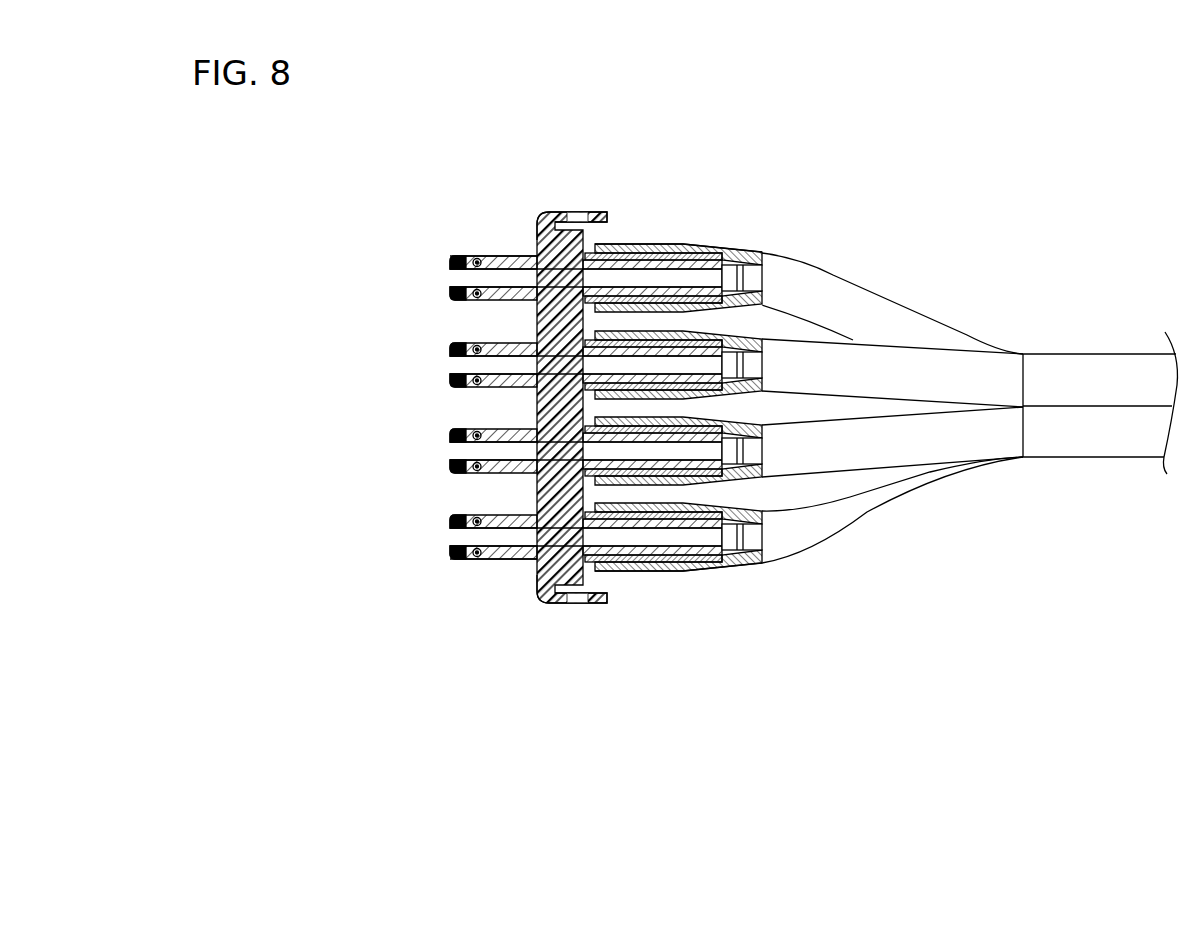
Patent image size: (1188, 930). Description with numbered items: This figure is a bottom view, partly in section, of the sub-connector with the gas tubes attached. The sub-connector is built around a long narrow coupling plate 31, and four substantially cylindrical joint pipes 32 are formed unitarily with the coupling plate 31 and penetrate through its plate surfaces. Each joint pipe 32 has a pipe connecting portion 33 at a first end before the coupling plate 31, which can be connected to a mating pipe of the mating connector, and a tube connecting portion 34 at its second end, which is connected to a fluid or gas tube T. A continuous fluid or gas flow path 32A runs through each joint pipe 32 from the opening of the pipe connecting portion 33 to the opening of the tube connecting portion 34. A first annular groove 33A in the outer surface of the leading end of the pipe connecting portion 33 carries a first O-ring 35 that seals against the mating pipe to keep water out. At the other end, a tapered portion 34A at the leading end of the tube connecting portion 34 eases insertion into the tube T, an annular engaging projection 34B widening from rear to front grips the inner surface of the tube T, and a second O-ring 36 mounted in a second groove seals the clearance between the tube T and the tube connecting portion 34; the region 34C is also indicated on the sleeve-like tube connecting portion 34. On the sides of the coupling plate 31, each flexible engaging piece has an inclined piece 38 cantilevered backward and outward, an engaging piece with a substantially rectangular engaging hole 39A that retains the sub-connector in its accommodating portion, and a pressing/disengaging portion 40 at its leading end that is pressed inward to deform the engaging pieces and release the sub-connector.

The coupling plate 31 is at (550, 313).
The joint pipe 32 is at (508, 340).
The fluid or gas flow path 32A is at (470, 368).
The pipe connecting portion 33 is at (502, 387).
The first annular groove 33A is at (480, 346).
The tube connecting portion 34 is at (647, 244).
The tapered portion 34A is at (713, 337).
The annular engaging projection 34B is at (630, 573).
The sleeve upper portion 34C is at (683, 244).
The first O-ring 35 is at (480, 254).
The second O-ring 36 is at (677, 560).
The inclined piece 38 is at (546, 222).
The engaging hole 39A is at (590, 212).
The pressing/disengaging portion 40 is at (610, 219).
The fluid or gas tube T is at (850, 300).